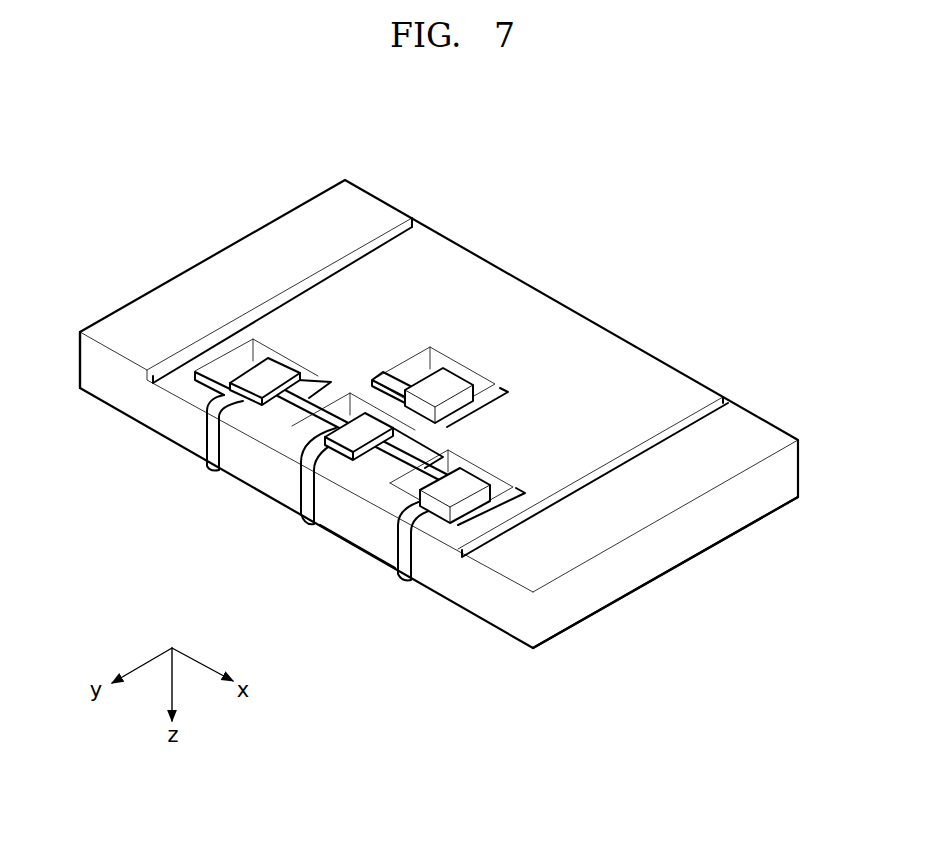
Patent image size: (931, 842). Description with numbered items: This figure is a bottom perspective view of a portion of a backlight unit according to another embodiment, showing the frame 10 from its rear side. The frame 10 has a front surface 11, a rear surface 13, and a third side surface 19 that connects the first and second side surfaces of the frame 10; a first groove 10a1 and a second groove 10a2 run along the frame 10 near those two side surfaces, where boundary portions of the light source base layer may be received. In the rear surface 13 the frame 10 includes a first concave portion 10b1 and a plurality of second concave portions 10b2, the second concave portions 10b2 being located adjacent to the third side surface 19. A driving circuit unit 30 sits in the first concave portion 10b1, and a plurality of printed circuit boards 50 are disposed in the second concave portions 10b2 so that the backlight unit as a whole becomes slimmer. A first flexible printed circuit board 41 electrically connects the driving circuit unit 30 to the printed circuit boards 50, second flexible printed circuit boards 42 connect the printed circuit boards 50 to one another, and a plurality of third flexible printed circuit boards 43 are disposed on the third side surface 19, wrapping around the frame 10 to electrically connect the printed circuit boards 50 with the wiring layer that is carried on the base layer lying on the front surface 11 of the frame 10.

The frame 10 is at (706, 235).
The first groove 10a1 is at (736, 397).
The second groove 10a2 is at (421, 211).
The first concave portion 10b1 is at (492, 390).
The second concave portions 10b2 is at (505, 488).
The front surface 11 is at (152, 428).
The rear surface 13 is at (375, 488).
The third side surface 19 is at (463, 595).
The driving circuit unit 30 is at (453, 378).
The first flexible printed circuit board 41 is at (393, 407).
The second flexible printed circuit boards 42 is at (312, 403).
The third flexible printed circuit boards 43 is at (306, 497).
The printed circuit boards 50 is at (260, 378).